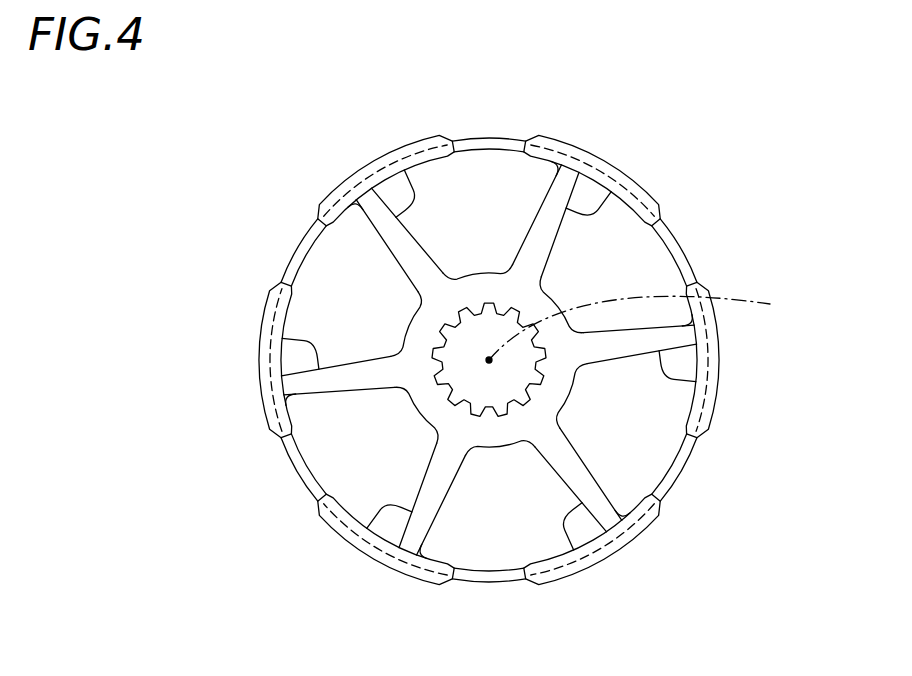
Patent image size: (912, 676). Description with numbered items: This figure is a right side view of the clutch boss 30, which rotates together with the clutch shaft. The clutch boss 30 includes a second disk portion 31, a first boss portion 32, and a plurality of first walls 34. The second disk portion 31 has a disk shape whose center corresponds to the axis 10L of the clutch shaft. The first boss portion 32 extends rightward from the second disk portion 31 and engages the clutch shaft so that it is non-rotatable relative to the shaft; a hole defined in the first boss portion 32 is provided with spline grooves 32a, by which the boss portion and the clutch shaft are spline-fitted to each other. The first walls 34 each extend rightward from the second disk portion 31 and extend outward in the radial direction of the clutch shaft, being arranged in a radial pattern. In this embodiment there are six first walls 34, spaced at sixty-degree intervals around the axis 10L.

The clutch boss 30 is at (720, 190).
The second disk portion 31 is at (469, 181).
The first boss portion 32 is at (491, 292).
The spline grooves 32a is at (435, 345).
The first walls 34 is at (387, 152).
The axis of the clutch shaft 10L is at (656, 325).